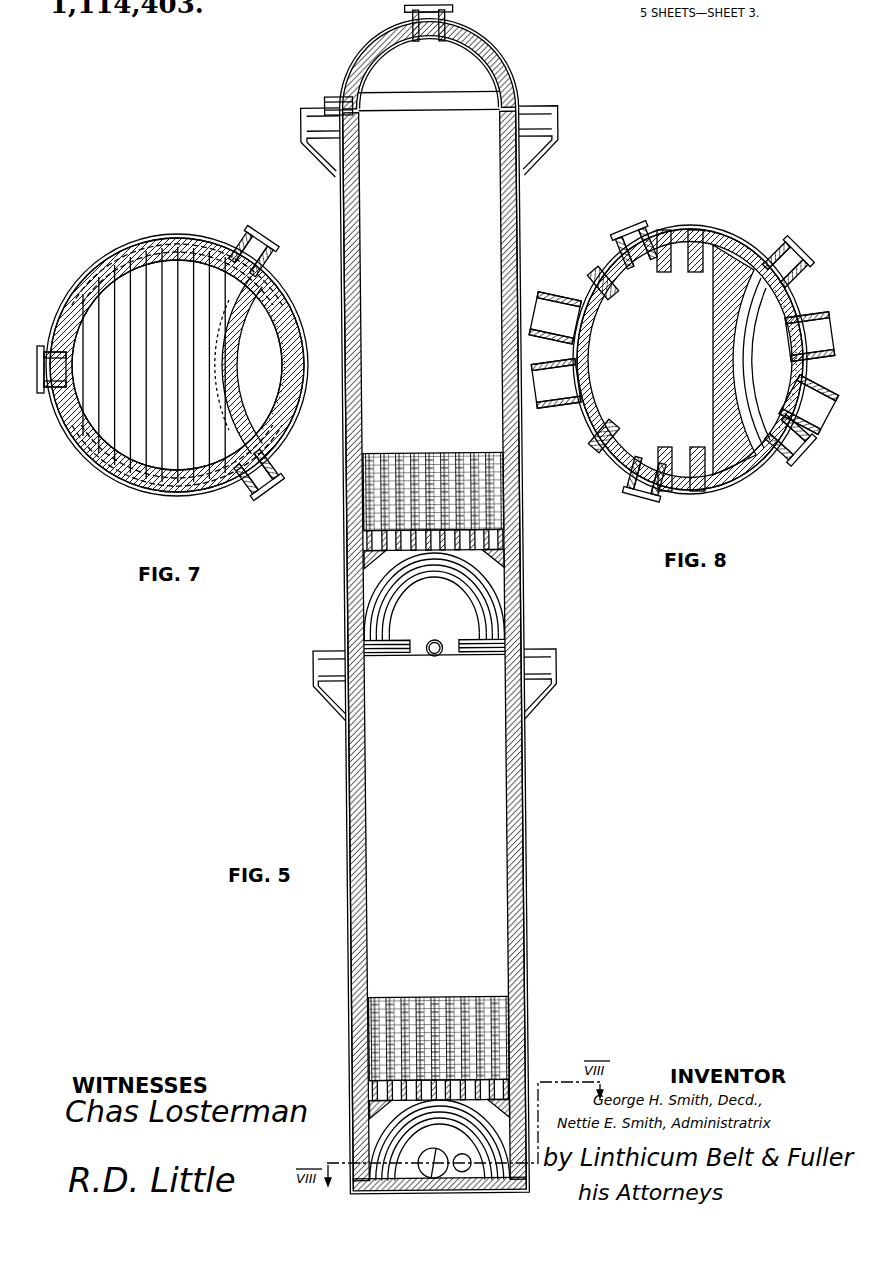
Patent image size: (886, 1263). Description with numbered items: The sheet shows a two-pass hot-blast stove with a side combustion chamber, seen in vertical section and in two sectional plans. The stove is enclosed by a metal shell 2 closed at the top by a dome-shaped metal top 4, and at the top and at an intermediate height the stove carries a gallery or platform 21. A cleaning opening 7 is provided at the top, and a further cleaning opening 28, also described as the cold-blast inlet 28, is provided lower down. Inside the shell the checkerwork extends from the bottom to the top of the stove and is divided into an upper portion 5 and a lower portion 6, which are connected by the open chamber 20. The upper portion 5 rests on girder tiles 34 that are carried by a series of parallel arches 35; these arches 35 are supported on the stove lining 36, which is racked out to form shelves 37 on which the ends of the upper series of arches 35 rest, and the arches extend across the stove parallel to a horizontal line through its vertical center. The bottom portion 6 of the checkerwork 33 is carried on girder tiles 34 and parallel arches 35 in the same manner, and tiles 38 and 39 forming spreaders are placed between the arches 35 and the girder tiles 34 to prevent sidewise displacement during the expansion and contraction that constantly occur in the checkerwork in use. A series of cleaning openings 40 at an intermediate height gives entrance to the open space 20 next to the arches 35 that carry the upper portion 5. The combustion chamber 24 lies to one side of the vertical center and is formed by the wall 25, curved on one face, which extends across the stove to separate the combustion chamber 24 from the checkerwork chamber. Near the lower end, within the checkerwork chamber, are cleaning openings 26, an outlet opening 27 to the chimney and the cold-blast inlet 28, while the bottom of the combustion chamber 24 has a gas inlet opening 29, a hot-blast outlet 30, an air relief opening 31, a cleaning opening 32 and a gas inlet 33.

In FIG. 5, the metal shell 2 is at (527, 829).
In FIG. 7, the metal shell 2 is at (301, 332).
In FIG. 8, the metal shell 2 is at (719, 494).
In FIG. 5, the dome-shaped metal top 4 is at (516, 70).
In FIG. 5, the upper portion of the checkerwork 5 is at (530, 460).
In FIG. 5, the lower portion of the checkerwork 6 is at (526, 1013).
In FIG. 5, the cleaning opening 7 is at (423, 22).
In FIG. 5, the chamber 20 is at (434, 626).
In FIG. 5, the gallery or platform 21 is at (563, 129).
In FIG. 7, the combustion chamber 24 is at (269, 365).
In FIG. 8, the combustion chamber 24 is at (779, 360).
In FIG. 7, the wall 25 is at (238, 341).
In FIG. 8, the wall 25 is at (633, 228).
In FIG. 8, the cleaning openings 26 is at (647, 500).
In FIG. 8, the outlet opening 27 is at (556, 384).
In FIG. 8, the cold-blast inlet 28 is at (555, 318).
In FIG. 8, the gas inlet opening 29 is at (809, 405).
In FIG. 5, the hot-blast outlet 30 is at (360, 341).
In FIG. 8, the hot-blast outlet 30 is at (810, 337).
In FIG. 8, the air relief opening 31 is at (786, 256).
In FIG. 8, the cleaning opening 32 is at (790, 460).
In FIG. 5, the gas inlet 33 is at (436, 1000).
In FIG. 5, the girder tiles 34 is at (506, 543).
In FIG. 7, the parallel arches 35 is at (185, 386).
In FIG. 8, the stove lining 36 is at (614, 450).
In FIG. 7, the shelves 37 is at (175, 240).
In FIG. 5, the spreader tiles 38 is at (482, 582).
In FIG. 5, the spreader tiles 39 is at (364, 553).
In FIG. 7, the cleaning openings 40 is at (288, 243).